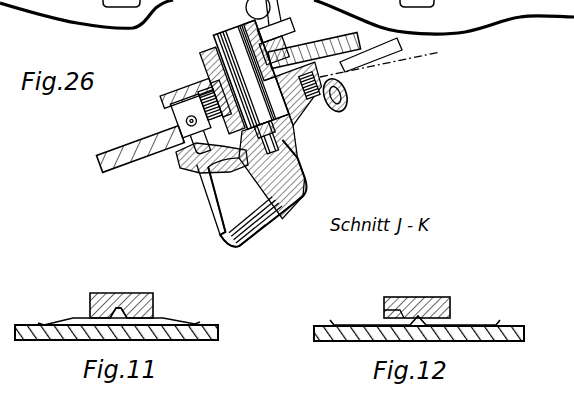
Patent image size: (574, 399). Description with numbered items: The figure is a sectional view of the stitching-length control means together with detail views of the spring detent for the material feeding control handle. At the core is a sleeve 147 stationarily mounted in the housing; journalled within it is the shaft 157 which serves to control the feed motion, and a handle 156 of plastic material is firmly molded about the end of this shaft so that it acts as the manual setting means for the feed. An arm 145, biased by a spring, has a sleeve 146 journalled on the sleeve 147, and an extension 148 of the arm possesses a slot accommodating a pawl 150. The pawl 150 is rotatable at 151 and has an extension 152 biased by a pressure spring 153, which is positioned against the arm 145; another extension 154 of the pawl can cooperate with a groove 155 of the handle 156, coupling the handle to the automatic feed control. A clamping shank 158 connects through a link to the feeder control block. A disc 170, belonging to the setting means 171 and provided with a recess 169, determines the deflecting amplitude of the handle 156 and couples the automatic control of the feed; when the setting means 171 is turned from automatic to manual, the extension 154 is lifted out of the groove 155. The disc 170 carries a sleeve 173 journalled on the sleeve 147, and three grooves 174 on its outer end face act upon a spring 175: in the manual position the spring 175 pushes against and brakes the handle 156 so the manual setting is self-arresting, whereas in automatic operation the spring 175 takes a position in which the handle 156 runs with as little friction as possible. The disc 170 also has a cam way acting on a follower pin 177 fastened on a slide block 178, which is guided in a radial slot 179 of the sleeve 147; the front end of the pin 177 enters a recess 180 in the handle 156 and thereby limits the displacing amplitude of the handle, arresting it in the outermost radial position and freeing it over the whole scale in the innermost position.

In FIG. 26, the arm 145 is at (160, 100).
In FIG. 26, the sleeve 146 is at (284, 57).
In FIG. 26, the sleeve 147 is at (203, 74).
In FIG. 26, the extension 148 is at (173, 115).
In FIG. 26, the pawl 150 is at (118, 144).
In FIG. 26, the pivot 151 is at (195, 130).
In FIG. 26, the extension 152 is at (213, 103).
In FIG. 26, the pressure spring 153 is at (205, 88).
In FIG. 26, the extension 154 is at (214, 231).
In FIG. 26, the groove 155 is at (240, 242).
In FIG. 26, the handle 156 is at (247, 244).
In FIG. 11, the handle 156 is at (200, 326).
In FIG. 12, the handle 156 is at (322, 329).
In FIG. 26, the shaft 157 is at (300, 148).
In FIG. 26, the clamping shank 158 is at (296, 25).
In FIG. 26, the recess 169 is at (190, 170).
In FIG. 26, the disc 170 is at (182, 162).
In FIG. 26, the setting means 171 is at (440, 53).
In FIG. 26, the sleeve 173 is at (258, 215).
In FIG. 11, the sleeve 173 is at (110, 293).
In FIG. 12, the sleeve 173 is at (451, 300).
In FIG. 11, the grooves 174 is at (153, 301).
In FIG. 12, the grooves 174 is at (395, 307).
In FIG. 26, the spring 175 is at (300, 100).
In FIG. 11, the spring 175 is at (73, 319).
In FIG. 12, the spring 175 is at (365, 325).
In FIG. 26, the follower pin 177 is at (330, 103).
In FIG. 26, the slide block 178 is at (341, 87).
In FIG. 26, the radial slot 179 is at (366, 67).
In FIG. 26, the recess 180 is at (347, 100).